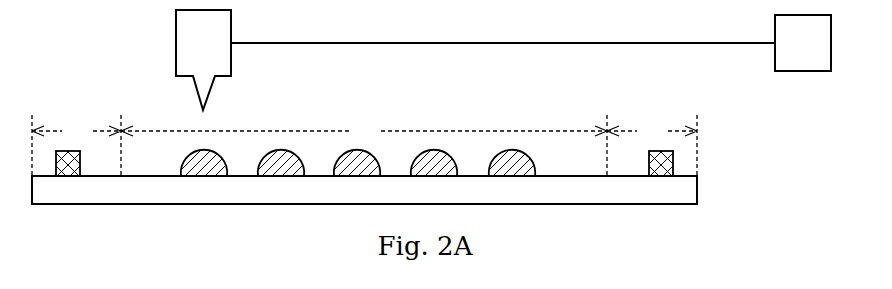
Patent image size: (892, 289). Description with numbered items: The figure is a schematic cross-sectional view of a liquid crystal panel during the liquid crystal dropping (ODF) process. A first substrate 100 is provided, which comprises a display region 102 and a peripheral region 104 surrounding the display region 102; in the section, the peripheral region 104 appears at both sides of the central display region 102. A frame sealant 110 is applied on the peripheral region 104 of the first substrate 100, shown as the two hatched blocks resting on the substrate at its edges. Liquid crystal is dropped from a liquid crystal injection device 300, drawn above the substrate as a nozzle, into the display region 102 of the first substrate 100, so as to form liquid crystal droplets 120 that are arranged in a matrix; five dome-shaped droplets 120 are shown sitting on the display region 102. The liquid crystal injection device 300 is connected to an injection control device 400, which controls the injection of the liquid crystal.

The first substrate 100 is at (364, 190).
The display region 102 is at (364, 130).
The peripheral region 104 is at (364, 145).
The frame sealant 110 is at (673, 160).
The liquid crystal droplet 120 is at (518, 158).
The liquid crystal injection device 300 is at (203, 60).
The injection control device 400 is at (531, 43).